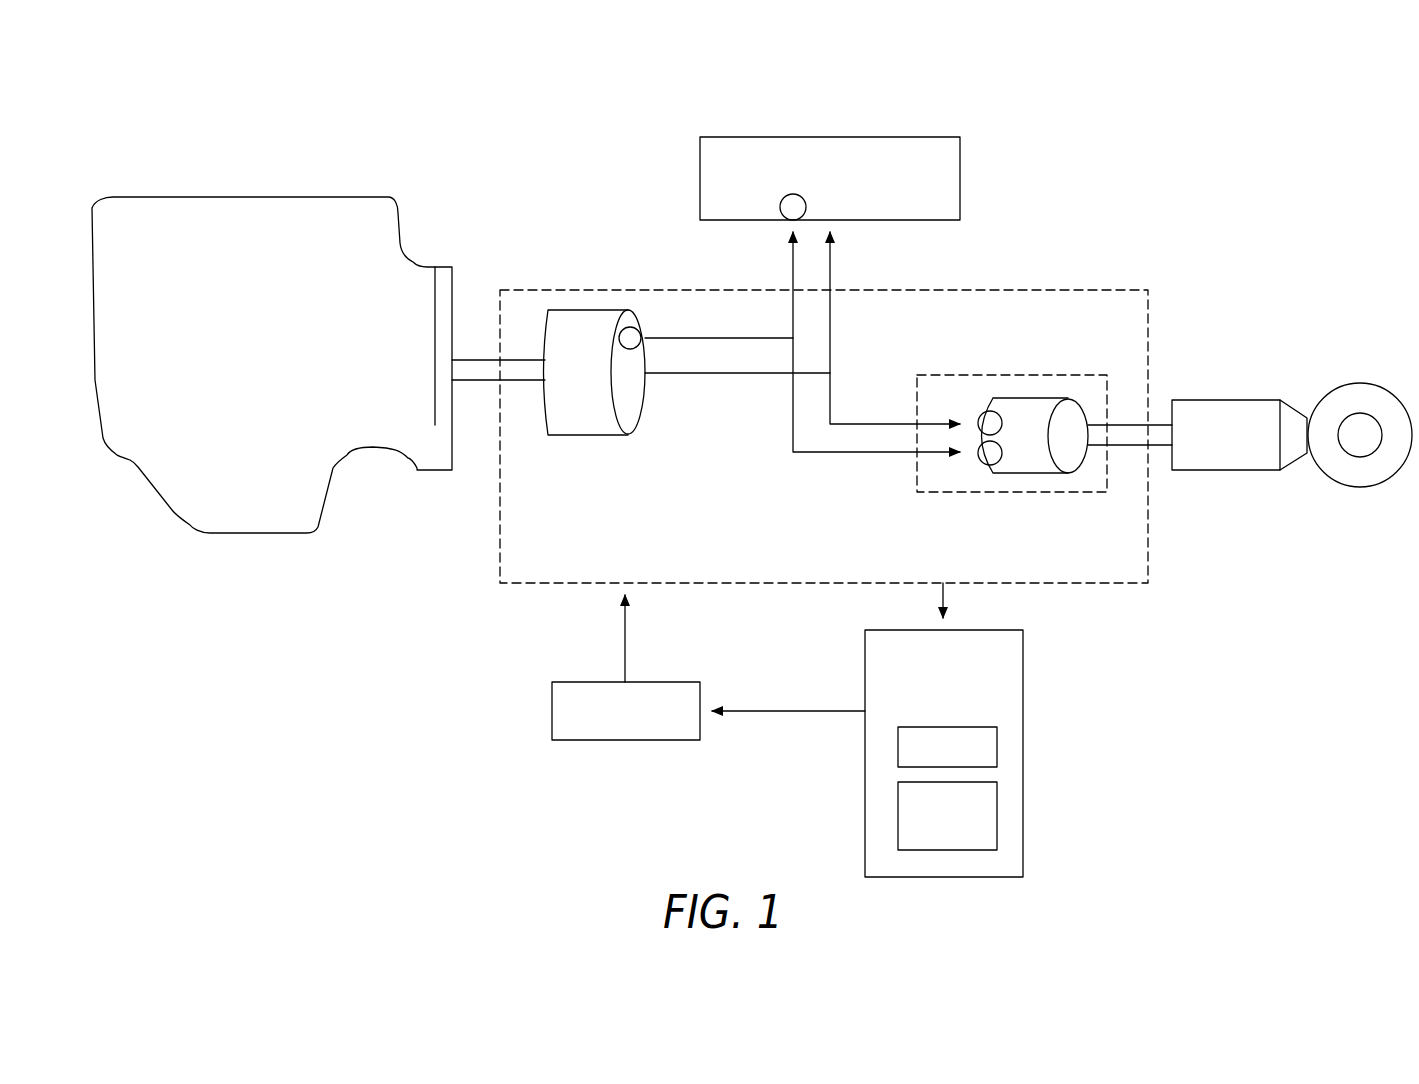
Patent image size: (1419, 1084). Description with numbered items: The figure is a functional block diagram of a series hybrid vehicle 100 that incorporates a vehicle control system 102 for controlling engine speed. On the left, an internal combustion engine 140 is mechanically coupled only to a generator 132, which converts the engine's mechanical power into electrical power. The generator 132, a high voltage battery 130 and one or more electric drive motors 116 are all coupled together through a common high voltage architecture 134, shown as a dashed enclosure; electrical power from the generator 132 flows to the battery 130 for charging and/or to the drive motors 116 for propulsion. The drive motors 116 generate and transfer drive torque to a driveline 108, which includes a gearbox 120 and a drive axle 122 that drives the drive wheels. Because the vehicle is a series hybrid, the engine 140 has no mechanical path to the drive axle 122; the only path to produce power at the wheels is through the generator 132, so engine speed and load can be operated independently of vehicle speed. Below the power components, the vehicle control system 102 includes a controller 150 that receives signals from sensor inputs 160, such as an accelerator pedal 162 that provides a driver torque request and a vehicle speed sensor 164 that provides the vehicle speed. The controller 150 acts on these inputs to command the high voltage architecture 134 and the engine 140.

The series hybrid vehicle 100 is at (1236, 124).
The vehicle control system 102 is at (450, 716).
The driveline 108 is at (1282, 282).
The drive motors 116 is at (1022, 418).
The gearbox 120 is at (1248, 470).
The drive axle 122 is at (1383, 382).
The high voltage battery 130 is at (928, 137).
The generator 132 is at (590, 322).
The common high voltage architecture 134 is at (992, 290).
The internal combustion engine 140 is at (215, 197).
The controller 150 is at (660, 740).
The sensor inputs 160 is at (1023, 673).
The accelerator pedal 162 is at (997, 745).
The vehicle speed sensor 164 is at (997, 815).